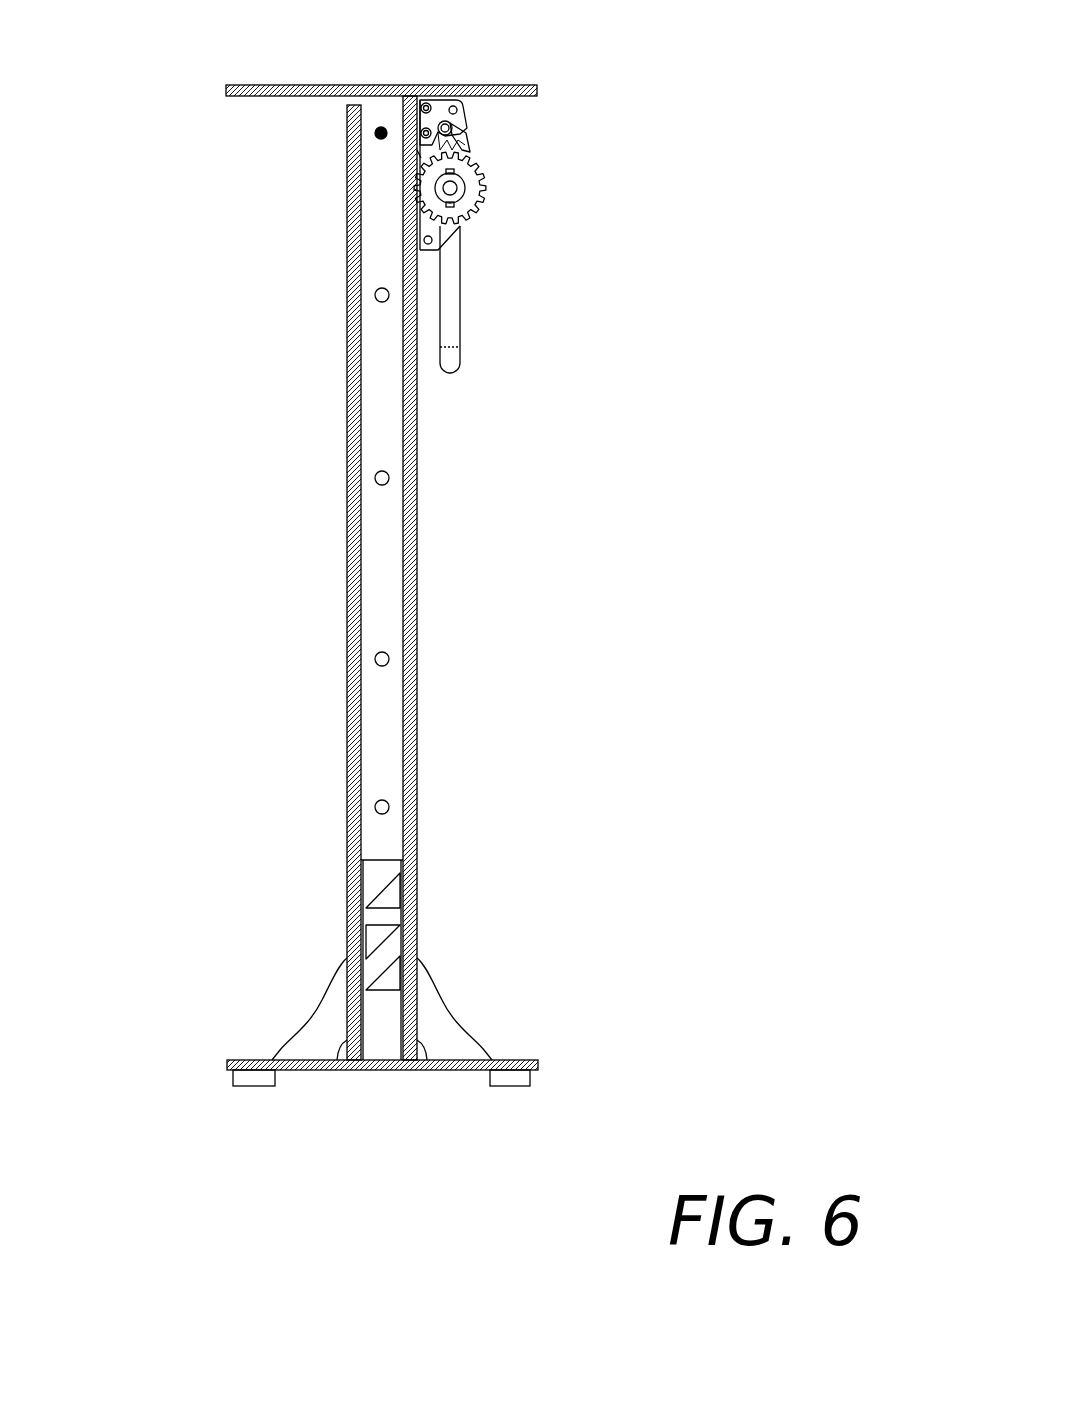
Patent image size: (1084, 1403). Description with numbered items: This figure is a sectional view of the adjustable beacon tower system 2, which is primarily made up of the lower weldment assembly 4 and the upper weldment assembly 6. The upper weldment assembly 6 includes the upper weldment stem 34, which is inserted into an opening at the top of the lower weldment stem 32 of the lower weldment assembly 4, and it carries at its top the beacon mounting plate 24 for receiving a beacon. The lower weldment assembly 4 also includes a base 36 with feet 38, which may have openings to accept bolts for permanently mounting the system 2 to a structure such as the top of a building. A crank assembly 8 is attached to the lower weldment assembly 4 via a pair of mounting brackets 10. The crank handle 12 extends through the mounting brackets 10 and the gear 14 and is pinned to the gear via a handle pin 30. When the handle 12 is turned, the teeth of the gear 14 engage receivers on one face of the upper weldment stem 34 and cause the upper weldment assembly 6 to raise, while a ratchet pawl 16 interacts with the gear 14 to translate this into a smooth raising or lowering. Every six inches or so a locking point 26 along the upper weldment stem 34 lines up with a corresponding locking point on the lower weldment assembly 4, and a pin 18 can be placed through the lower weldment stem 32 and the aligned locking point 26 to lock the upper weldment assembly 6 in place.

The adjustable beacon tower system 2 is at (745, 58).
The lower weldment assembly 4 is at (453, 683).
The upper weldment assembly 6 is at (197, 63).
The crank assembly 8 is at (568, 130).
The mounting brackets 10 is at (463, 118).
The crank handle 12 is at (460, 300).
The gear 14 is at (490, 177).
The ratchet pawl 16 is at (467, 128).
The pin 18 is at (375, 133).
The beacon mounting plate 24 is at (535, 87).
The locking point 26 is at (378, 654).
The handle pin 30 is at (422, 158).
The lower weldment stem 32 is at (417, 790).
The upper weldment stem 34 is at (350, 518).
The base 36 is at (243, 1060).
The feet 38 is at (490, 1085).